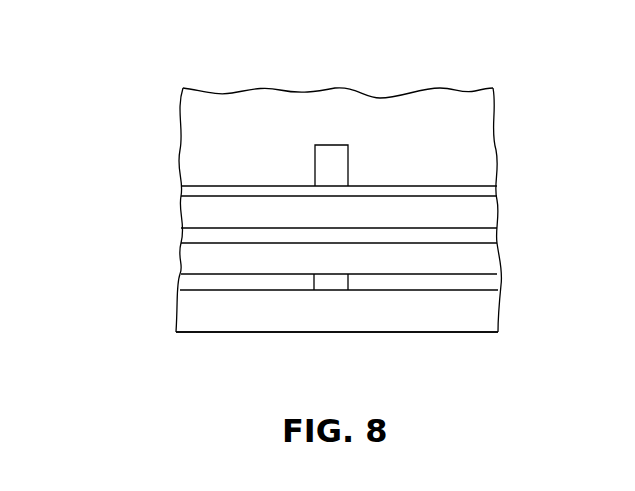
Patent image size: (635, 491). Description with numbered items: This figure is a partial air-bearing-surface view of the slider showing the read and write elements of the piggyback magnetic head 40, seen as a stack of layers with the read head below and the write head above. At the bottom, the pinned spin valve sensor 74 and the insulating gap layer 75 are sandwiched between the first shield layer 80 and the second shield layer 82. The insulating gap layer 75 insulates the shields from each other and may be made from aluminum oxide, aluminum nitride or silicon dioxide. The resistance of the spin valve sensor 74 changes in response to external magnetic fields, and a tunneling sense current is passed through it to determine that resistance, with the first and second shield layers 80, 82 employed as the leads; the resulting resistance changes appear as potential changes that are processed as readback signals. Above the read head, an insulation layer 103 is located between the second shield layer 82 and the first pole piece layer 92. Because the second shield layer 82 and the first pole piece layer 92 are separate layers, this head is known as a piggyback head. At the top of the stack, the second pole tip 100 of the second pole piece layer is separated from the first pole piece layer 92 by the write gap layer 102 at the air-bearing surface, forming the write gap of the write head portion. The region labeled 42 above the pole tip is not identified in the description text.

The piggyback magnetic head 40 is at (512, 105).
The top layer 42 is at (183, 118).
The second pole tip 100 is at (324, 145).
The write gap layer 102 is at (248, 190).
The first pole piece layer 92 is at (186, 208).
The insulation layer 103 is at (488, 239).
The second shield layer 82 is at (180, 262).
The insulating gap layer 75 is at (238, 285).
The pinned spin valve sensor 74 is at (330, 285).
The first shield layer 80 is at (488, 315).